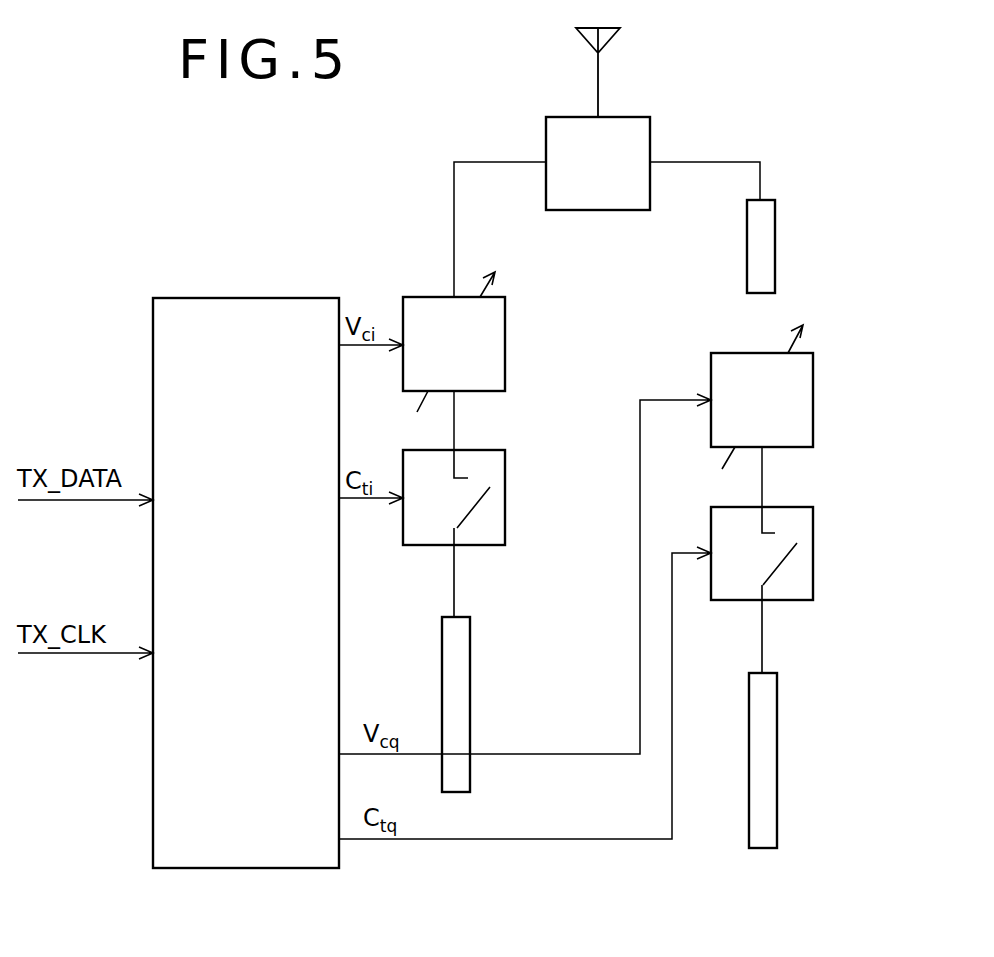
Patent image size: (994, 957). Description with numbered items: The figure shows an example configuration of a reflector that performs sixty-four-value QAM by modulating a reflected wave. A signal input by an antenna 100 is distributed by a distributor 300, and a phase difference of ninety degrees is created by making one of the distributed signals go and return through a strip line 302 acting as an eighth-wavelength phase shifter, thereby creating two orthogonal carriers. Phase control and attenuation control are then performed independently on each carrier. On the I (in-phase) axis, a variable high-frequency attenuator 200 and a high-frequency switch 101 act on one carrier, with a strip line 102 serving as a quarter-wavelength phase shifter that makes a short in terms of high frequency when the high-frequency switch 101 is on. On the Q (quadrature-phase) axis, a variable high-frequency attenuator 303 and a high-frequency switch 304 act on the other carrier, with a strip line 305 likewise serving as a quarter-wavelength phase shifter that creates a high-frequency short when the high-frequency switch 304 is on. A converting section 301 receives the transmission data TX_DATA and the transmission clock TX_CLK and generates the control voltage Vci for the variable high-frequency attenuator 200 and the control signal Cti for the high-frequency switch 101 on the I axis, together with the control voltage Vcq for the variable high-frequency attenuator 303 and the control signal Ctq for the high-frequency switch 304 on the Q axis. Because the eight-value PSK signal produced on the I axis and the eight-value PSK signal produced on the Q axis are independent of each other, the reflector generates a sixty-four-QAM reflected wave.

The antenna 100 is at (618, 37).
The distributor 300 is at (650, 134).
The strip line as a λ/8 phase shifter 302 is at (775, 221).
The variable high-frequency attenuator 200 is at (505, 343).
The high-frequency switch 101 is at (505, 496).
The strip line as a λ/4 phase shifter 102 is at (470, 637).
The converting section 301 is at (278, 298).
The variable high-frequency attenuator 303 is at (813, 397).
The high-frequency switch 304 is at (813, 550).
The strip line as a λ/4 phase shifter 305 is at (777, 693).